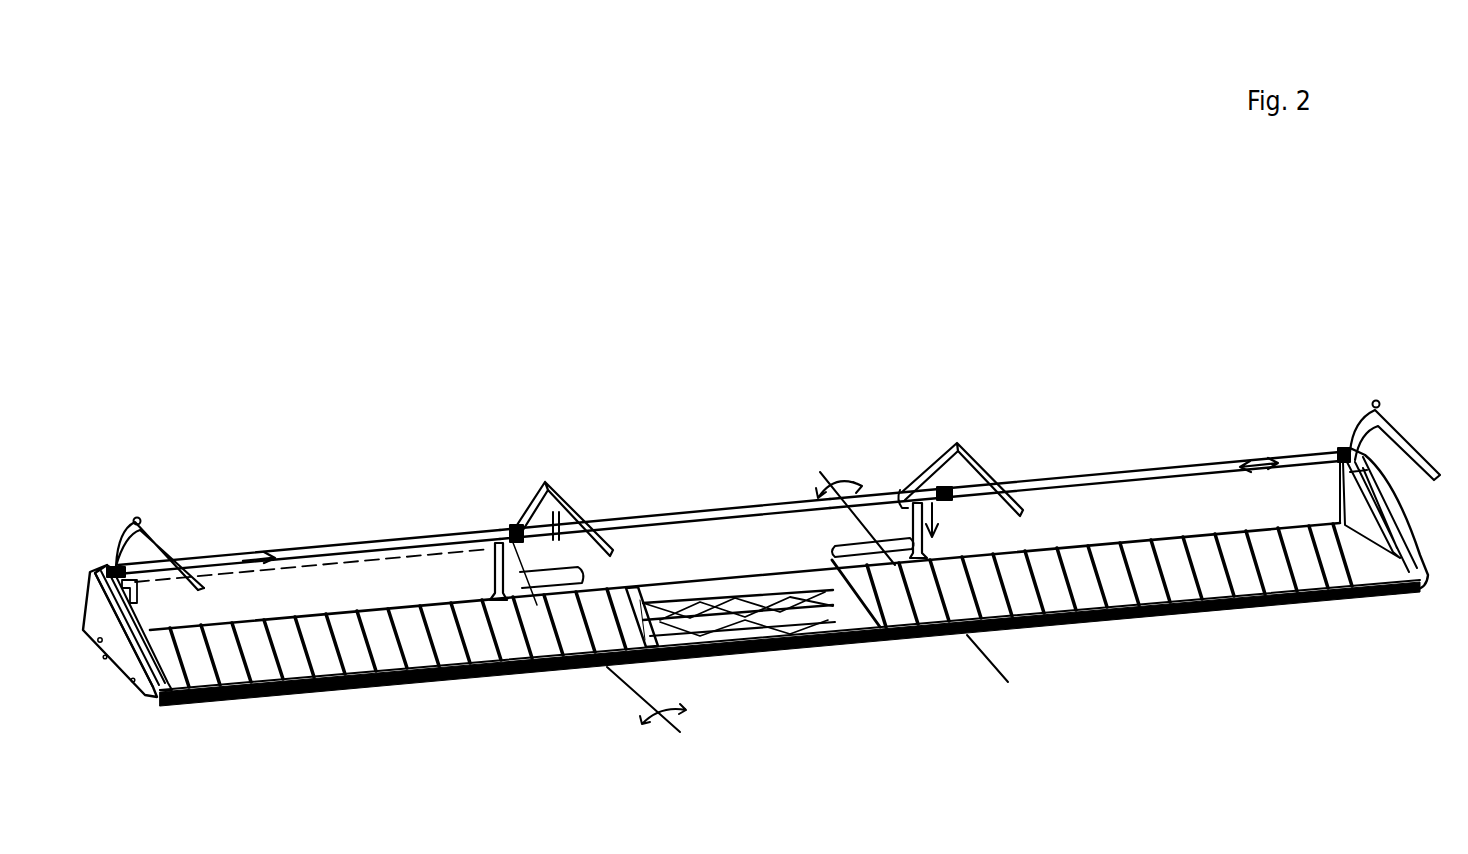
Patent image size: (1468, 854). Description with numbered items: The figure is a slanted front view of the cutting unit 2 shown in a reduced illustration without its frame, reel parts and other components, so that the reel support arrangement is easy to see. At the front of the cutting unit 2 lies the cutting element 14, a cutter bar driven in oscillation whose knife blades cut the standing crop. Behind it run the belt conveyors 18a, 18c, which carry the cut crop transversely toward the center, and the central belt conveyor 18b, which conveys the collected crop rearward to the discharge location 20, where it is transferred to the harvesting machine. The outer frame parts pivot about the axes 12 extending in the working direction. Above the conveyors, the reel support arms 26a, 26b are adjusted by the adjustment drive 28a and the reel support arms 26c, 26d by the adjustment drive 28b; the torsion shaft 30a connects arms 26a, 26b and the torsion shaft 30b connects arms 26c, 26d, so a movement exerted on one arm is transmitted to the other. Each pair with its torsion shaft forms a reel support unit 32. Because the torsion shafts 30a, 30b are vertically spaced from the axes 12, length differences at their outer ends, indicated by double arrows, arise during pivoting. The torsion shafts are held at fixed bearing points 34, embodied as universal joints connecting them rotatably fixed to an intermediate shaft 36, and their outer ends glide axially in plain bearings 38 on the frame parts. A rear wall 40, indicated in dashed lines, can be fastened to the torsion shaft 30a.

The cutting unit 2 is at (645, 230).
The axes 12 is at (632, 693).
The cutting element 14 is at (980, 633).
The belt conveyor 18a is at (400, 683).
The belt conveyor 18b is at (783, 650).
The belt conveyor 18c is at (1170, 622).
The discharge location 20 is at (725, 575).
The reel support arm 26a is at (167, 550).
The reel support arm 26b is at (582, 520).
The reel support arm 26c is at (986, 467).
The reel support arm 26d is at (1417, 440).
The adjustment drive 28a is at (487, 563).
The adjustment drive 28b is at (931, 488).
The torsion shaft 30a is at (343, 543).
The torsion shaft 30b is at (1170, 467).
The side wall 32 is at (240, 371).
The fixed bearing points 34 is at (510, 527).
The intermediate shaft 36 is at (752, 502).
The plain bearings 38 is at (118, 565).
The rear wall 40 is at (395, 577).